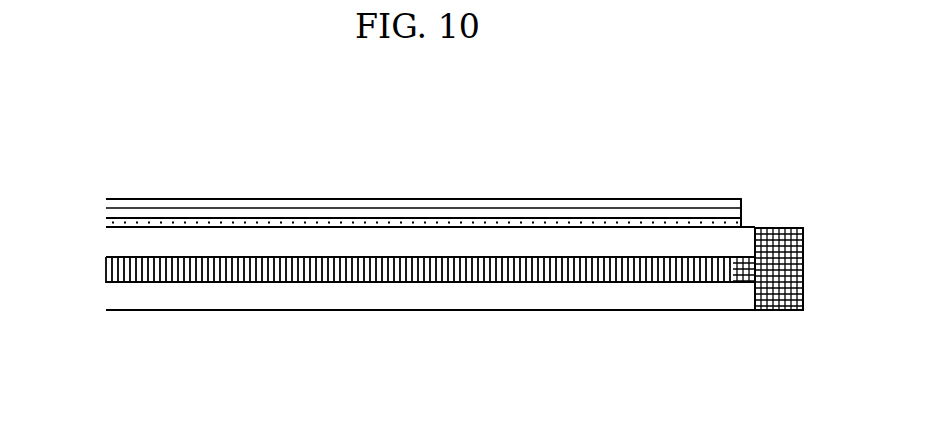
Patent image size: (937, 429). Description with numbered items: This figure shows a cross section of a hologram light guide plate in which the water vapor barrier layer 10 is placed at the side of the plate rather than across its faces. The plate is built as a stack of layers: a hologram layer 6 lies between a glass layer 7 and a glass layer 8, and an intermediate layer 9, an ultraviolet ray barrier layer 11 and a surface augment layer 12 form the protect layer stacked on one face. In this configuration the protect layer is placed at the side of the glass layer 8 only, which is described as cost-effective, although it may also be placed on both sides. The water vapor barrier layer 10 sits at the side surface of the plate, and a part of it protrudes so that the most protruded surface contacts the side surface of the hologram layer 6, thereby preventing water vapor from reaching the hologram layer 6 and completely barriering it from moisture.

The hologram layer 6 is at (110, 267).
The glass layer 7 is at (113, 299).
The glass layer 8 is at (108, 237).
The intermediate layer 9 is at (741, 226).
The water vapor barrier layer 10 is at (775, 310).
The ultraviolet ray barrier layer 11 is at (104, 215).
The surface augment layer 12 is at (551, 201).